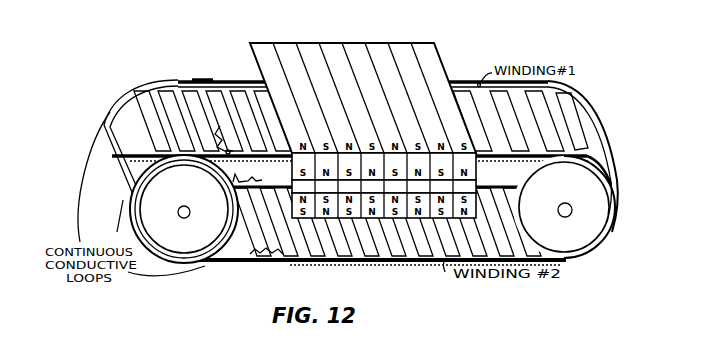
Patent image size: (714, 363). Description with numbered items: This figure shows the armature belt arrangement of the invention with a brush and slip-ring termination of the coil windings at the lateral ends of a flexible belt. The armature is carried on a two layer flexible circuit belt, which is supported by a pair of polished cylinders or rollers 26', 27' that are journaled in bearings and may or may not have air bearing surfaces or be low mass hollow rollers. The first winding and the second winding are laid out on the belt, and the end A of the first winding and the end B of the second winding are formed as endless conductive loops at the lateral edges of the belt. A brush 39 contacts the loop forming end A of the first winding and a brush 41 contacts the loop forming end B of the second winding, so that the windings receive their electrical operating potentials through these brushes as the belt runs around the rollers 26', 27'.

The brush 39 is at (219, 82).
The brush 41 is at (280, 261).
The roller 26' is at (184, 209).
The roller 27' is at (564, 207).
The end of winding #1 A is at (196, 69).
The end of winding #2 B is at (262, 260).